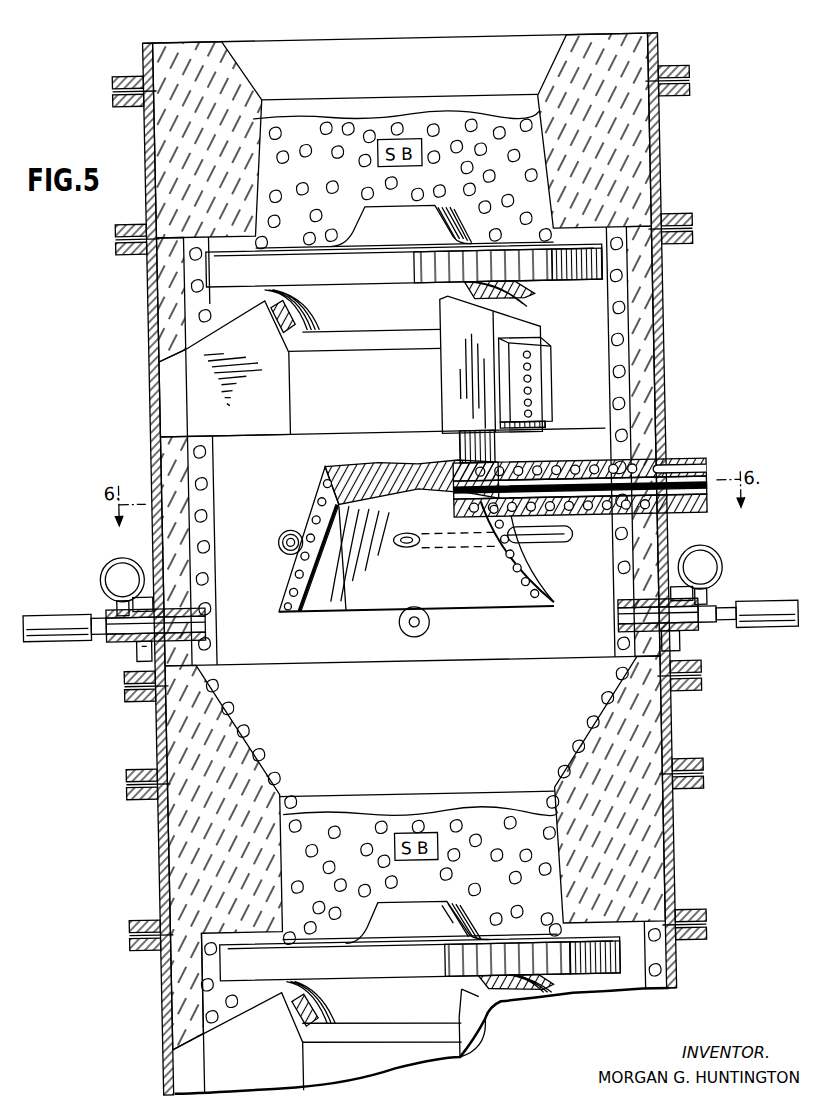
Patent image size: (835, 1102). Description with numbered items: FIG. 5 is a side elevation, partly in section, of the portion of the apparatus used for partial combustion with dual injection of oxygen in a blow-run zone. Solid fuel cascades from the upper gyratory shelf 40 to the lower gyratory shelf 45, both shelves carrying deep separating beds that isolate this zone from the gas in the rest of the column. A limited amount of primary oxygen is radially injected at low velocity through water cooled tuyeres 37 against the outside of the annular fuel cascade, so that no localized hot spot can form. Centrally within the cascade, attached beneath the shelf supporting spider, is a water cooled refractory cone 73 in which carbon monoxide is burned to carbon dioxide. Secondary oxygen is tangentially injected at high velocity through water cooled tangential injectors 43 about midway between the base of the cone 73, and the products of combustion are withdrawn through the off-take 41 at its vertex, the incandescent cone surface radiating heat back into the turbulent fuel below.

The water cooled tuyeres 37 is at (205, 618).
The gyratory shelf 40 is at (401, 214).
The off-take 41 is at (456, 482).
The tangential injectors 43 is at (409, 537).
The gyratory shelf 45 is at (390, 903).
The water cooled refractory cone 73 is at (320, 494).